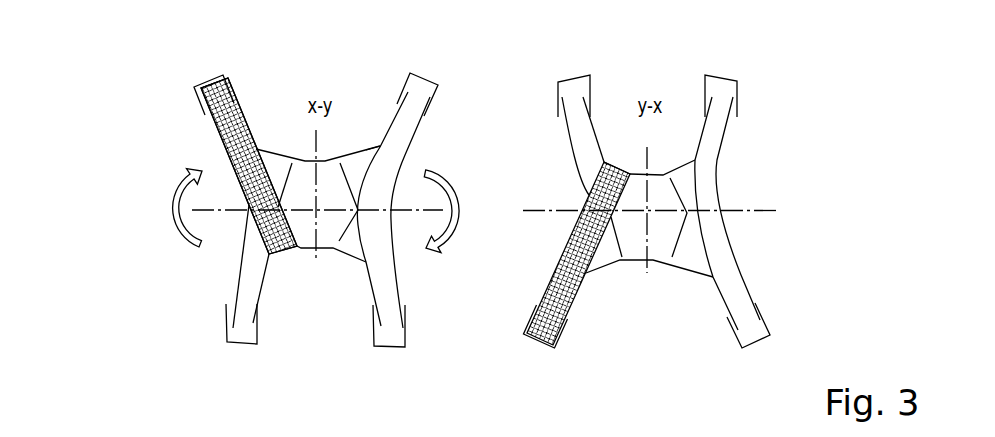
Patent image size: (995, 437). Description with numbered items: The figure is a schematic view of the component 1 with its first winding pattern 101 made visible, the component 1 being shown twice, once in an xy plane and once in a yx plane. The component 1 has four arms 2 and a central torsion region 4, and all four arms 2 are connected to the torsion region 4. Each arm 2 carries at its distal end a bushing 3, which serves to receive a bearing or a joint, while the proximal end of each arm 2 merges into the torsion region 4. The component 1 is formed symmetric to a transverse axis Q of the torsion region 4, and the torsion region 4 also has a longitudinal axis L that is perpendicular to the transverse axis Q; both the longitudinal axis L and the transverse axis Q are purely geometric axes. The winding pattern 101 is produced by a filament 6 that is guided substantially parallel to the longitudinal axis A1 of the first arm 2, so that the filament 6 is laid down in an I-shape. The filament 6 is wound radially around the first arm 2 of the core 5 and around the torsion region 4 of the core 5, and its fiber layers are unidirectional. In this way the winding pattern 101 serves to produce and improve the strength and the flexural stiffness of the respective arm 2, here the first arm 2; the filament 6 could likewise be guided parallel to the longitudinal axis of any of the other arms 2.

The component 1 is at (761, 103).
The arm 2 is at (403, 117).
The bushing 3 is at (218, 73).
The torsion region 4 is at (330, 233).
The core 5 is at (390, 157).
The filament 6 is at (262, 227).
The first winding pattern 101 is at (222, 145).
The longitudinal axis of the first arm A1 is at (200, 72).
The transverse axis Q is at (315, 146).
The longitudinal axis L is at (754, 210).